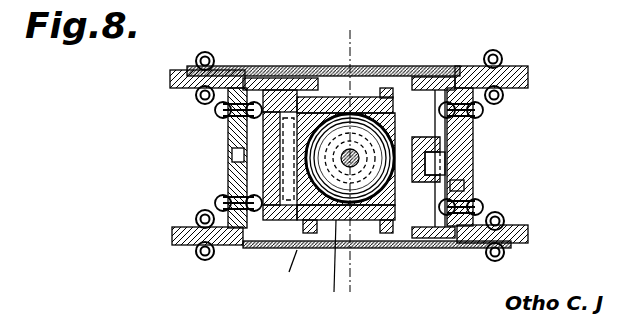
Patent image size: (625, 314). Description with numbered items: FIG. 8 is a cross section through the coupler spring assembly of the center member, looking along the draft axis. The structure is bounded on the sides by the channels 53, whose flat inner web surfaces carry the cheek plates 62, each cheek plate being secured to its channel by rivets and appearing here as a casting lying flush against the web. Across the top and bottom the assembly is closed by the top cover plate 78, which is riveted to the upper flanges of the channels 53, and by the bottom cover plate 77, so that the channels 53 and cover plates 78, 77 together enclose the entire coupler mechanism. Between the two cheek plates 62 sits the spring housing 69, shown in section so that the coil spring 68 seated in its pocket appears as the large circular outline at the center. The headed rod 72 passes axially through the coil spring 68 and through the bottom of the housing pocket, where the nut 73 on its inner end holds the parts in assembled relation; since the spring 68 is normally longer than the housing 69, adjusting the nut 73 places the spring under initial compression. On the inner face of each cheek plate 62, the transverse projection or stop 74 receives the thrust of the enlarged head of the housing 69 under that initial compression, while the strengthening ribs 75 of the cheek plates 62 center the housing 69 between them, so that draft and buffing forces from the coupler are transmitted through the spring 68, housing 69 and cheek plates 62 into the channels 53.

The top cover plate 78 is at (381, 66).
The bottom cover plate 77 is at (250, 250).
The channels 53 is at (528, 80).
The cheek plates 62 is at (240, 98).
The coil spring 68 is at (377, 250).
The headed rod 72 is at (353, 157).
The nut 73 is at (378, 183).
The housing 69 is at (332, 267).
The transverse projection or stop 74 is at (445, 162).
The strengthening ribs 75 is at (460, 170).